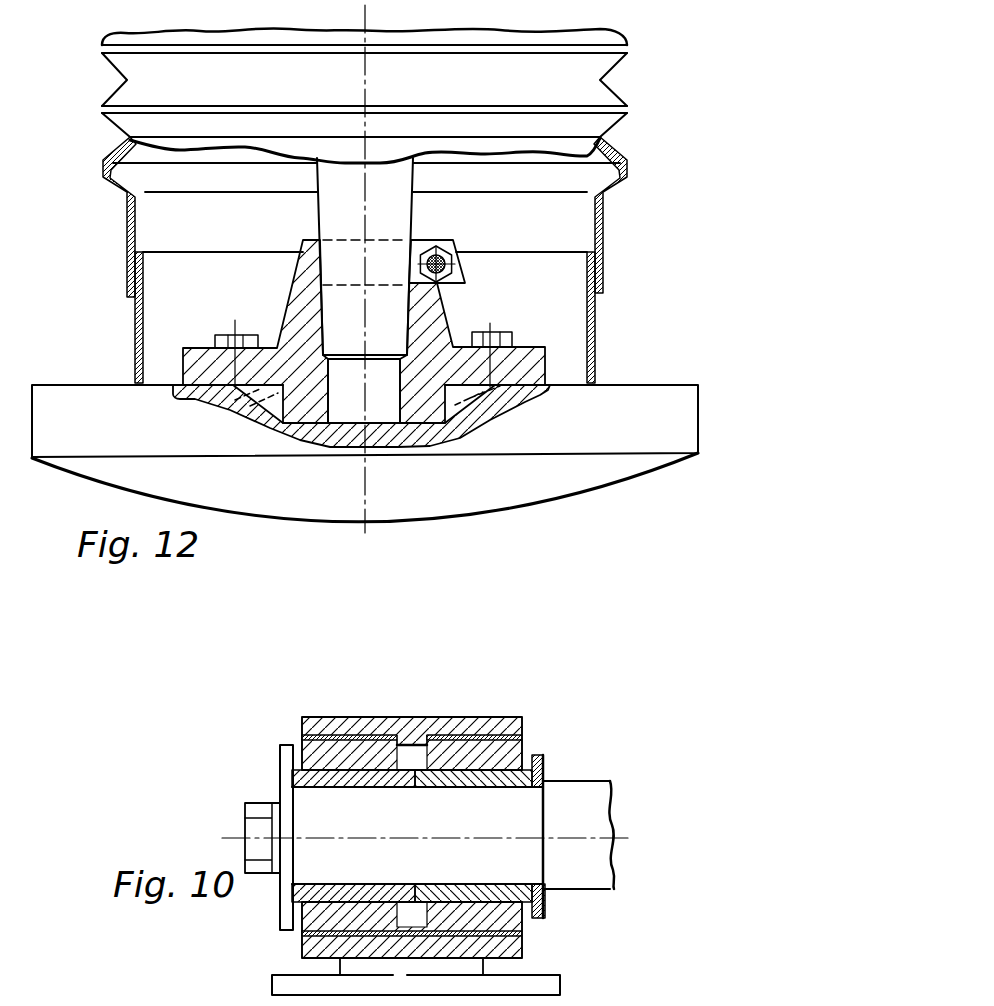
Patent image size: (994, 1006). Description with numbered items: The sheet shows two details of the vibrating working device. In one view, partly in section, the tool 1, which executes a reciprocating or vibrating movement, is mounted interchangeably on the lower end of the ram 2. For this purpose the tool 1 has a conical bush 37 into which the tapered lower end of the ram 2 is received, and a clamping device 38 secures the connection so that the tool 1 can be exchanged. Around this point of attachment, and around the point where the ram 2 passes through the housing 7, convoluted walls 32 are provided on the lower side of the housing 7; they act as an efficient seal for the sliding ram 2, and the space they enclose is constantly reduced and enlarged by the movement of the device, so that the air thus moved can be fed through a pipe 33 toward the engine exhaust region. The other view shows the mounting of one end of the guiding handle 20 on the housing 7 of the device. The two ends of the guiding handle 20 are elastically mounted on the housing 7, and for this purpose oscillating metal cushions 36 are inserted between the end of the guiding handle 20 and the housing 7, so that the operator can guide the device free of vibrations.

In FIG. 12, the tool 1 is at (490, 482).
In FIG. 12, the ram 2 is at (348, 178).
In FIG. 12, the convoluted walls 32 is at (600, 118).
In FIG. 12, the pipe 33 is at (558, 330).
In FIG. 12, the conical bush 37 is at (300, 335).
In FIG. 12, the clamping device 38 is at (456, 278).
In FIG. 10, the oscillating metal cushions 36 is at (357, 753).
In FIG. 10, the guiding handle 20 is at (508, 852).
In FIG. 10, the housing 7 is at (417, 937).